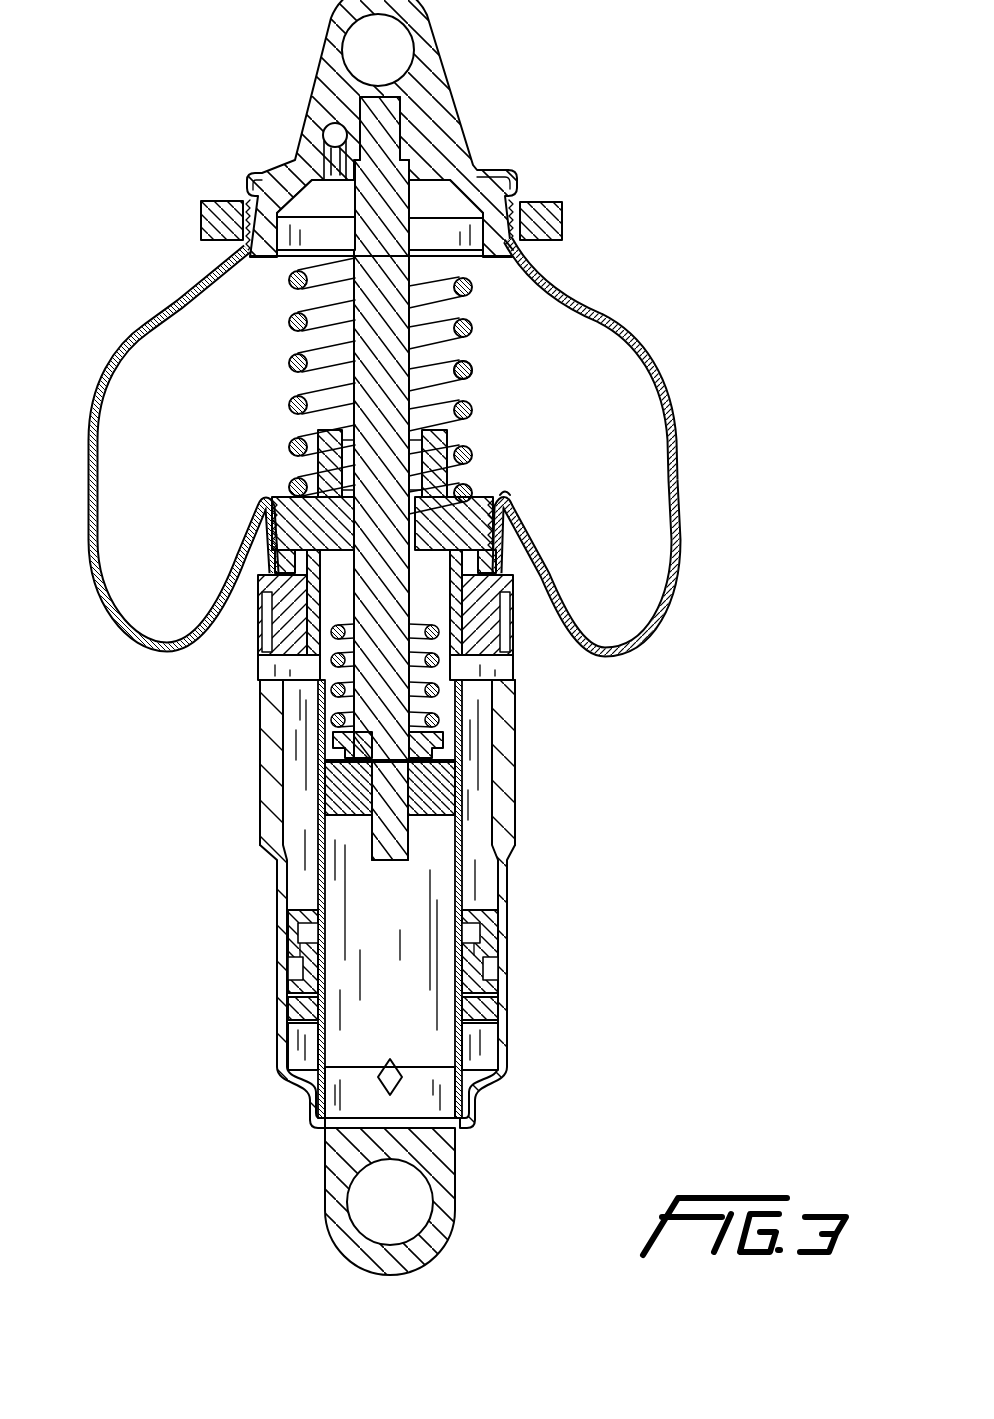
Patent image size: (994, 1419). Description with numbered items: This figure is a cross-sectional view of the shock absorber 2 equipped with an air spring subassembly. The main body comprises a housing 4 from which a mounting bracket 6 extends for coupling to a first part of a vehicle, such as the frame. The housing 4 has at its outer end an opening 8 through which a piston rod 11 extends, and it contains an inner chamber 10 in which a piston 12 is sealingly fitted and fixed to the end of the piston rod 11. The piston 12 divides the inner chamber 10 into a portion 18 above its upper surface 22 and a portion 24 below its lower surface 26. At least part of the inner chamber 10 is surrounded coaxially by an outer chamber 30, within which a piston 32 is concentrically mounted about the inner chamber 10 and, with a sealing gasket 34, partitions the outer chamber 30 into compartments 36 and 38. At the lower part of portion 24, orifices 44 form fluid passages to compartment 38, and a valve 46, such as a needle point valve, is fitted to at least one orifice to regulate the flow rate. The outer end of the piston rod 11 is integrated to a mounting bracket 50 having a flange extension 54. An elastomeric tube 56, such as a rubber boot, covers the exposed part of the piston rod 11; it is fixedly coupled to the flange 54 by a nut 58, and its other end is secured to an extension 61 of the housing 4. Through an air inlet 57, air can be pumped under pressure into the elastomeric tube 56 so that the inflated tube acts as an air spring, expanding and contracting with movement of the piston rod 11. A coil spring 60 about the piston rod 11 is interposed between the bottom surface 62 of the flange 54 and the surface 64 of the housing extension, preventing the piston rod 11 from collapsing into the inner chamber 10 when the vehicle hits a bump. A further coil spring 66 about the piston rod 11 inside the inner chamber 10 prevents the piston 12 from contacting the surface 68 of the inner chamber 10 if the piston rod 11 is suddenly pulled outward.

The shock absorber 2 is at (110, 292).
The housing 4 is at (263, 786).
The mounting bracket 6 is at (325, 1219).
The opening 8 is at (447, 497).
The inner chamber 10 is at (482, 886).
The piston rod 11 is at (472, 371).
The piston 12 is at (455, 778).
The portion of inner chamber 18 is at (432, 603).
The upper surface of piston 22 is at (445, 739).
The portion of inner chamber 24 is at (455, 972).
The lower surface of piston 26 is at (457, 836).
The outer chamber 30 is at (270, 844).
The piston 32 is at (290, 946).
The sealing gasket 34 is at (290, 979).
The compartment of outer chamber 36 is at (318, 751).
The compartment of outer chamber 38 is at (297, 1056).
The orifice 44 is at (473, 1108).
The valve 46 is at (378, 1082).
The mounting bracket 50 is at (445, 85).
The flange extension 54 is at (512, 184).
The elastomeric tube 56 is at (678, 352).
The air inlet 57 is at (330, 131).
The nut 58 is at (563, 215).
The coil spring 60 is at (296, 361).
The extension of housing 61 is at (505, 512).
The bottom surface of flange 62 is at (510, 270).
The surface of extension 64 is at (287, 480).
The coil spring 66 is at (262, 696).
The surface of inner chamber 68 is at (273, 567).